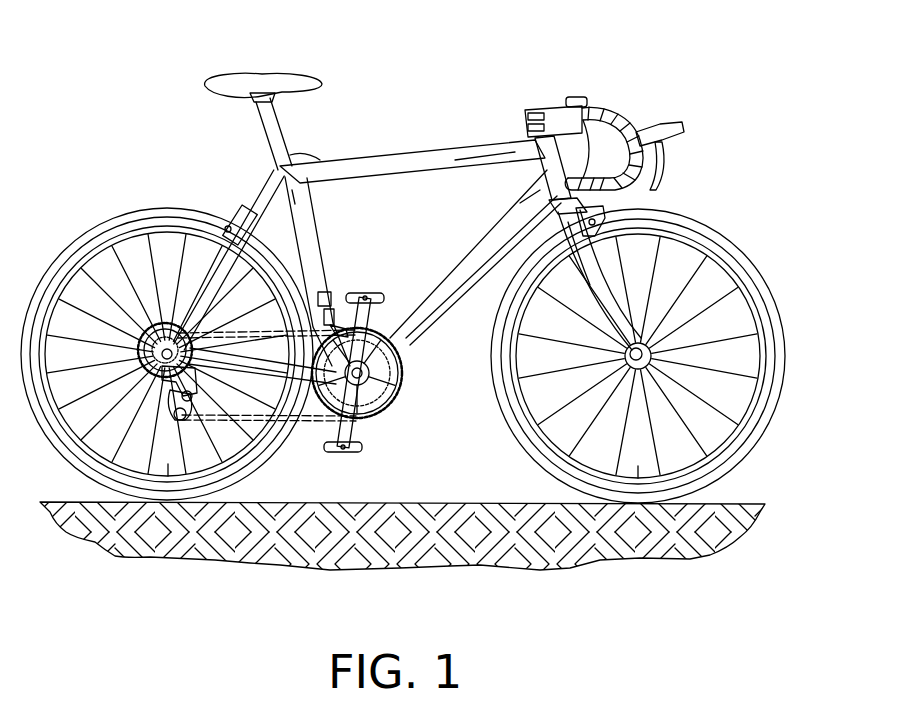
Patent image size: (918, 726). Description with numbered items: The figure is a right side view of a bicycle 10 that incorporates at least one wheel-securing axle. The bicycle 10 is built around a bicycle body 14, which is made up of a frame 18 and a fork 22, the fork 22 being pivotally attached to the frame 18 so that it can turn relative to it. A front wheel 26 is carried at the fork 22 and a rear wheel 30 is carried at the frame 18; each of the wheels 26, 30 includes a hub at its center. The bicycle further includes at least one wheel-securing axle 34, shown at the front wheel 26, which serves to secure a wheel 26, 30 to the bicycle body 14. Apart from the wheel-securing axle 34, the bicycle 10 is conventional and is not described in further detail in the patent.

The bicycle 10 is at (427, 305).
The bicycle body 14 is at (372, 240).
The frame 18 is at (312, 240).
The fork 22 is at (597, 303).
The front wheel 26 is at (662, 343).
The rear wheel 30 is at (88, 240).
The wheel-securing axle 34 is at (688, 335).